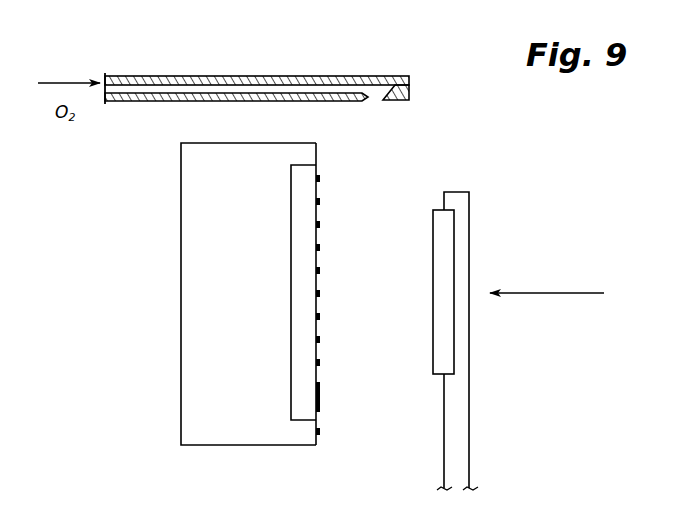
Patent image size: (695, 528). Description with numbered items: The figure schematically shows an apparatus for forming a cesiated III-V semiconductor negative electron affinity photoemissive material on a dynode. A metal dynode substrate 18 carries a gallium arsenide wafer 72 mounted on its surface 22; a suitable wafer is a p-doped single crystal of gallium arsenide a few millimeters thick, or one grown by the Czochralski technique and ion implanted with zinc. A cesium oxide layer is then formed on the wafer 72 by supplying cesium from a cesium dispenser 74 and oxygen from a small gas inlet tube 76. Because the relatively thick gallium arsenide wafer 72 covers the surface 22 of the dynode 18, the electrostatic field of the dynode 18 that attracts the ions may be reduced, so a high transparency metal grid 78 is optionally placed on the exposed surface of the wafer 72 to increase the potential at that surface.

The dynode substrate 18 is at (186, 291).
The surface 22 is at (322, 176).
The gallium arsenide wafer 72 is at (305, 412).
The cesium dispenser 74 is at (476, 387).
The gas inlet tube 76 is at (147, 98).
The high transparency metal grid 78 is at (320, 399).